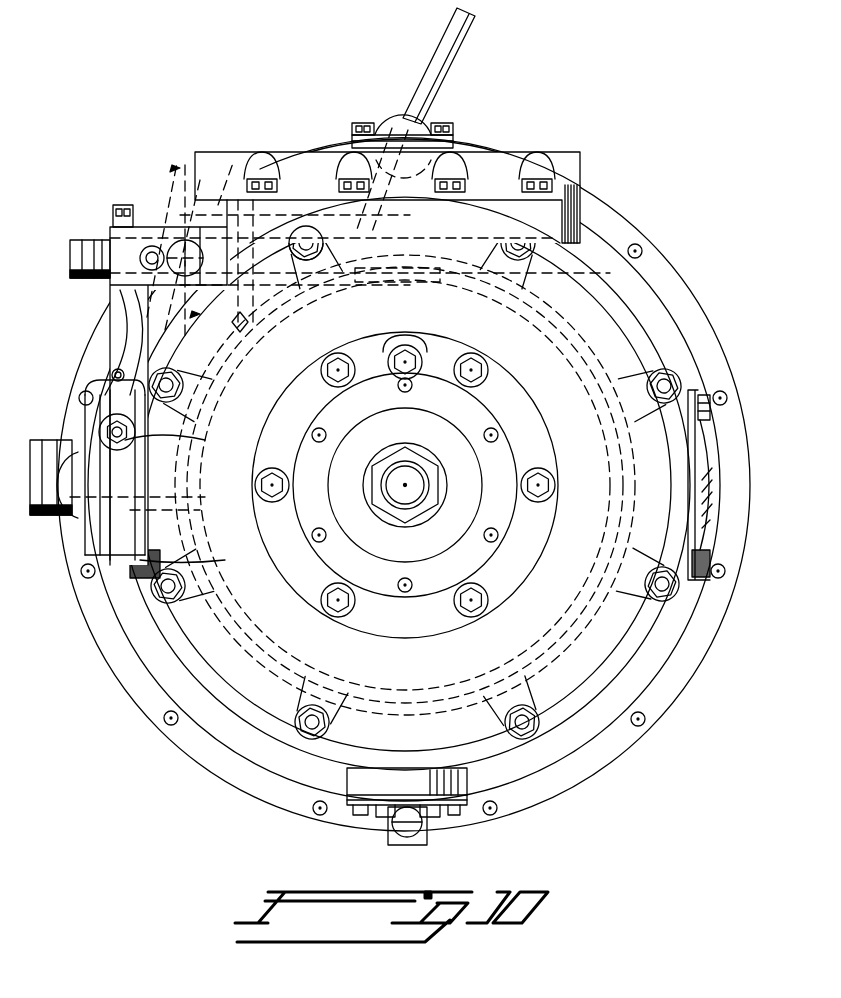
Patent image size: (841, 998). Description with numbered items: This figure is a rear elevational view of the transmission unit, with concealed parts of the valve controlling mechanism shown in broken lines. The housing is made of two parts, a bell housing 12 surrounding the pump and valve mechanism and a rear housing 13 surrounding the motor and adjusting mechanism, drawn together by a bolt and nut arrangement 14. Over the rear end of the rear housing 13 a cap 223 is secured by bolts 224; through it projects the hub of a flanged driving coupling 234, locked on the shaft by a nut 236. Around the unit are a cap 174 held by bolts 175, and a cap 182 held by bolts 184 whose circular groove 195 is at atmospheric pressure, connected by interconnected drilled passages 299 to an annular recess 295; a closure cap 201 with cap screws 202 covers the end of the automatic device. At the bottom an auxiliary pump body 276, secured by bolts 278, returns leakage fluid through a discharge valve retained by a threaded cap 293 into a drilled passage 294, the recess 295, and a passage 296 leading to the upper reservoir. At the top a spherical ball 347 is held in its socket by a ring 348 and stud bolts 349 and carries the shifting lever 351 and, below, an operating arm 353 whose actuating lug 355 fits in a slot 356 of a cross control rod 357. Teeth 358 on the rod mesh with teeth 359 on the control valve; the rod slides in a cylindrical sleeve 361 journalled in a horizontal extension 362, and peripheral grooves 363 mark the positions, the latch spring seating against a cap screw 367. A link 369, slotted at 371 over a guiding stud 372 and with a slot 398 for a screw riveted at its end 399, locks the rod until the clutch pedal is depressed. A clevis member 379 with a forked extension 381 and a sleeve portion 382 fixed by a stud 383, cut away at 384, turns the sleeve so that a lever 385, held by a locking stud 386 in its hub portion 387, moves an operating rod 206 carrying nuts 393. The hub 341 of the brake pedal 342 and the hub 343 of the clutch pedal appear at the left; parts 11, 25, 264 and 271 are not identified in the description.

The gear shift lever positions / shaft 11 is at (207, 242).
The bell housing 12 is at (210, 722).
The rear housing 13 is at (225, 648).
The bolt and nut arrangement 14 is at (168, 605).
The shaft nut 25 is at (405, 512).
The cap 174 is at (715, 445).
The bolts 175 is at (712, 400).
The cap 182 is at (197, 555).
The bolts 184 is at (150, 585).
The circular groove 195 is at (223, 484).
The closure cap 201 is at (151, 500).
The cap screws 202 is at (82, 410).
The operating rod 206 is at (182, 434).
The cap 223 is at (280, 412).
The bolts 224 is at (335, 597).
The flanged driving coupling 234 is at (328, 422).
The nut 236 is at (384, 485).
The housing bolt 264 is at (548, 190).
The cover plate 271 is at (365, 150).
The auxiliary pump body 276 is at (470, 790).
The bolts 278 is at (462, 812).
The threaded cap 293 is at (420, 835).
The drilled passage 294 is at (540, 480).
The annular recess 295 is at (223, 461).
The passage 296 is at (250, 322).
The drilled passages 299 is at (118, 566).
The hub 341 is at (55, 525).
The brake pedal 342 is at (82, 395).
The hub 343 is at (55, 455).
The spherical ball 347 is at (390, 125).
The ring 348 is at (352, 140).
The stud bolts 349 is at (455, 130).
The shifting lever 351 is at (435, 112).
The operating arm 353 is at (416, 215).
The actuating lug 355 is at (360, 252).
The slot 356 is at (397, 285).
The cross control rod 357 is at (75, 258).
The teeth 358 is at (425, 276).
The teeth 359 is at (370, 283).
The cylindrical sleeve 361 is at (305, 226).
The horizontal extension 362 is at (195, 240).
The peripheral grooves 363 is at (100, 280).
The cap screw 367 is at (240, 278).
The link 369 is at (140, 345).
The slot 371 is at (112, 235).
The guiding stud 372 is at (158, 245).
The clevis member 379 is at (345, 180).
The forked extension 381 is at (471, 172).
The sleeve portion 382 is at (290, 190).
The stud 383 is at (350, 192).
The cut away 384 is at (348, 295).
The lever 385 is at (112, 320).
The locking stud 386 is at (135, 210).
The hub portion 387 is at (113, 208).
The nuts 393 is at (121, 421).
The slot 398 is at (112, 370).
The end 399 is at (122, 368).